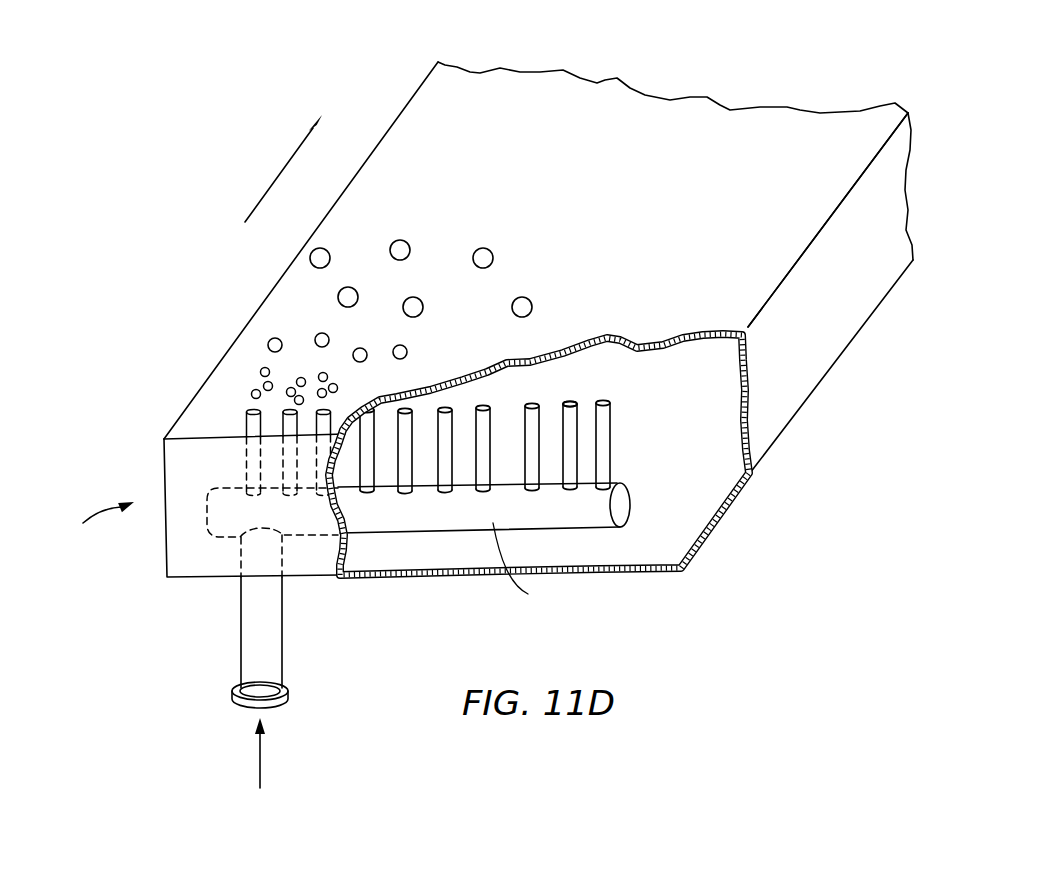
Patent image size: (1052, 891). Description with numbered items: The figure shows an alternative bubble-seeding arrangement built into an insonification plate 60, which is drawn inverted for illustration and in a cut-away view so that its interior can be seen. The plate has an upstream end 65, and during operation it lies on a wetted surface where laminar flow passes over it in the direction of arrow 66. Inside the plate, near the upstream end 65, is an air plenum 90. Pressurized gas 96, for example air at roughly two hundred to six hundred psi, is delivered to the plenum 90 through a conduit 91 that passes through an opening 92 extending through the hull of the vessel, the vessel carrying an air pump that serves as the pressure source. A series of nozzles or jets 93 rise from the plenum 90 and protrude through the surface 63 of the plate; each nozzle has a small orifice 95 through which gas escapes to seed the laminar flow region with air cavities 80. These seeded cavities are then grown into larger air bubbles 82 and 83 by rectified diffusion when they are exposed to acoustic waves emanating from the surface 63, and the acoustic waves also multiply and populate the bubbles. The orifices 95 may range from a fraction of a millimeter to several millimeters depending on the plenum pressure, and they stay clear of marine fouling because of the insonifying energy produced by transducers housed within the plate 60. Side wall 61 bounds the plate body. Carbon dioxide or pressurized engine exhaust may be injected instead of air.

The insonification plate 60 is at (732, 52).
The side wall 61 is at (831, 397).
The surface of the insonification plate 63 is at (588, 160).
The upstream end 65 is at (91, 522).
The direction of laminar flow 66 is at (280, 168).
The air cavities 80 is at (252, 393).
The larger air bubbles 82 is at (268, 342).
The larger air bubbles 83 is at (326, 249).
The air plenum 90 is at (493, 523).
The conduit 91 is at (243, 637).
The opening 92 is at (276, 706).
The nozzles or jets 93 is at (607, 437).
The orifices 95 is at (568, 402).
The pressurized gas 96 is at (260, 752).